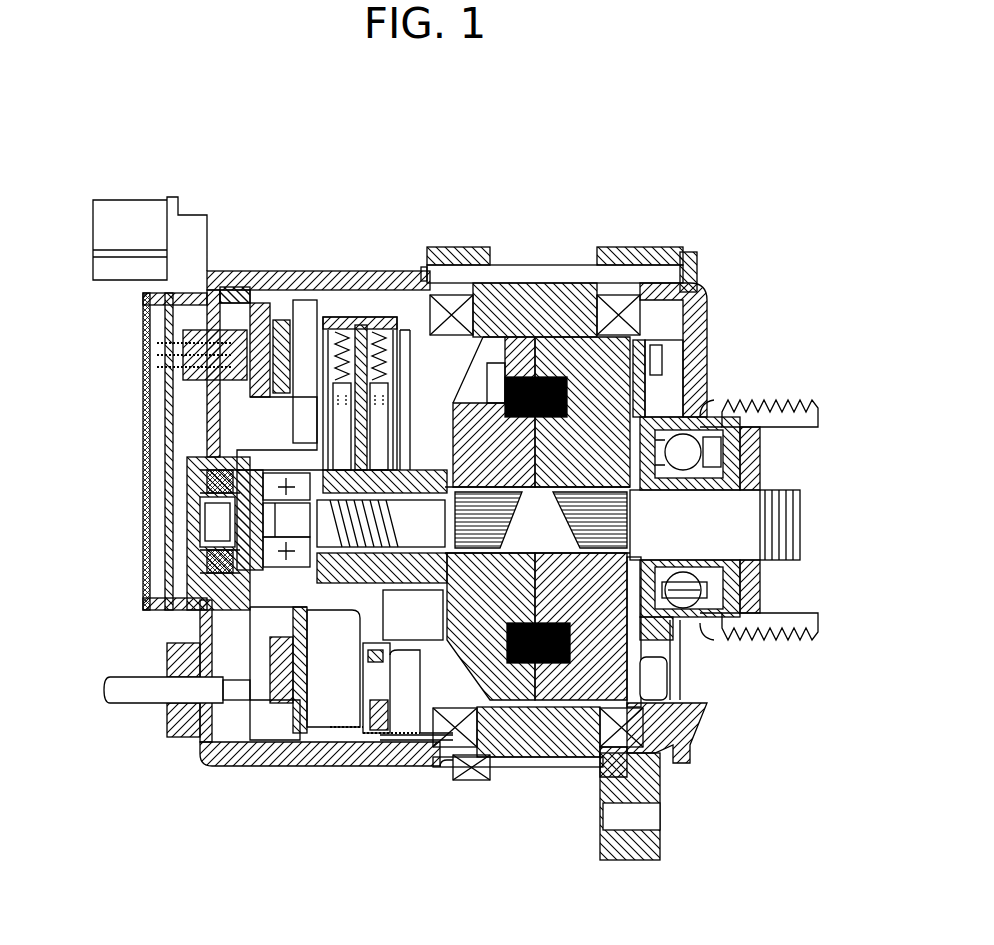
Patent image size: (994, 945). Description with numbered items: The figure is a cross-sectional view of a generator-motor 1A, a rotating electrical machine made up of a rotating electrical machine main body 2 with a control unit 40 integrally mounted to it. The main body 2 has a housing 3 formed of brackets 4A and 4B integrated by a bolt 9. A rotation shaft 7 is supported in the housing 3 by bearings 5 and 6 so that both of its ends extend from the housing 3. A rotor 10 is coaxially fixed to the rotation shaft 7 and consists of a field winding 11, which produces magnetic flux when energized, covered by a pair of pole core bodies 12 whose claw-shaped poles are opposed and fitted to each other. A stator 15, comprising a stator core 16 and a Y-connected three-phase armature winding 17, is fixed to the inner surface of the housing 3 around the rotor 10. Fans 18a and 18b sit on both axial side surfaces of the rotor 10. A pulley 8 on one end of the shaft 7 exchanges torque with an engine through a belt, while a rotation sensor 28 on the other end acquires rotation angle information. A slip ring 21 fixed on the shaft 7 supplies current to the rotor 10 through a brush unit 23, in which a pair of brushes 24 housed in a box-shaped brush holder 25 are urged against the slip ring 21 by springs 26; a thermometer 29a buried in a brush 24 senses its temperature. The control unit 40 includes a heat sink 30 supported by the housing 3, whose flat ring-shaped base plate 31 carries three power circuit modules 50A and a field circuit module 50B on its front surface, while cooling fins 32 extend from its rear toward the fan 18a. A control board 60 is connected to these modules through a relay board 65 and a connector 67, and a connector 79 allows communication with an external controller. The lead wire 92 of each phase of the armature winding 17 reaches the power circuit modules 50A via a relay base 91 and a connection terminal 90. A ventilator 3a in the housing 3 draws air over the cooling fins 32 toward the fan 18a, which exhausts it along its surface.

The generator-motor 1A is at (84, 98).
The rotating electrical machine main body 2 is at (247, 268).
The housing 3 is at (582, 523).
The ventilator 3a is at (440, 767).
The bracket 4A is at (640, 250).
The bracket 4B is at (268, 282).
The bearing 5 is at (703, 427).
The bearing 6 is at (195, 542).
The rotation shaft 7 is at (673, 523).
The pulley 8 is at (773, 417).
The bolt 9 is at (697, 270).
The rotor 10 is at (536, 427).
The field winding 11 is at (530, 378).
The pole core body 12 is at (470, 357).
The stator 15 is at (546, 836).
The stator core 16 is at (555, 740).
The armature winding 17 is at (472, 745).
The fan 18a is at (407, 730).
The fan 18b is at (660, 677).
The slip ring 21 is at (427, 353).
The brush unit 23 is at (327, 275).
The brush 24 is at (335, 323).
The brush holder 25 is at (350, 323).
The spring 26 is at (316, 323).
The rotation sensor 28 is at (195, 485).
The thermometer 29a is at (400, 330).
The heat sink 30 is at (305, 728).
The base plate 31 is at (303, 730).
The cooling fin 32 is at (327, 737).
The control unit 40 is at (165, 405).
The power circuit module 50A is at (185, 368).
The field circuit module 50B is at (277, 657).
The control board 60 is at (165, 467).
The relay board 65 is at (245, 410).
The connector 67 is at (185, 330).
The connector 79 is at (135, 210).
The connection terminal 90 is at (290, 743).
The relay base 91 is at (355, 733).
The lead wire 92 is at (400, 733).